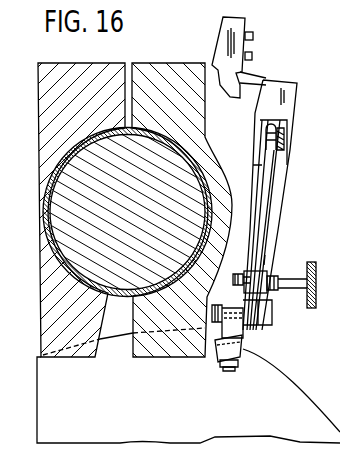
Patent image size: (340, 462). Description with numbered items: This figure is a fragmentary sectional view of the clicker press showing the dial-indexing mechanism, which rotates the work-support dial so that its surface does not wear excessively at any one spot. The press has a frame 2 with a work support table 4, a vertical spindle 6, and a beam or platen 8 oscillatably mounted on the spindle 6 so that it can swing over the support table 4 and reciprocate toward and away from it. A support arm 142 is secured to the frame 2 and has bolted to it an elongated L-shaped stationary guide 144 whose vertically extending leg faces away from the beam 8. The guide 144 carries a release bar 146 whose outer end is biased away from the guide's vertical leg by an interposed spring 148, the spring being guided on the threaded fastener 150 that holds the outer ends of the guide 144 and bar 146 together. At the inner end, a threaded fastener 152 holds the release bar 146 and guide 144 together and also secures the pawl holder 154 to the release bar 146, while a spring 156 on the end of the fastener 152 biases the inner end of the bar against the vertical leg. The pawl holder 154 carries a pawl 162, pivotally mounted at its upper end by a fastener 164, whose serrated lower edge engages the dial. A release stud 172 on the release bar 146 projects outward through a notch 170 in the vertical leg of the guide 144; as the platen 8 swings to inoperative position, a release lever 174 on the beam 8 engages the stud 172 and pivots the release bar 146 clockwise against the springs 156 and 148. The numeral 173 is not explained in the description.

The frame 2 is at (222, 27).
The work support table 4 is at (297, 384).
The vertical spindle 6 is at (145, 130).
The beam 8 is at (91, 63).
The support arm 142 is at (292, 104).
The stationary guide 144 is at (283, 192).
The release bar 146 is at (264, 212).
The spring 148 is at (283, 126).
The threaded fastener 150 is at (285, 146).
The threaded fastener 152 is at (266, 326).
The pawl holder 154 is at (243, 345).
The spring 156 is at (219, 305).
The pawl 162 is at (221, 365).
The fastener 164 is at (230, 369).
The notch 170 is at (258, 282).
The release stud 172 is at (284, 289).
The guide 173 is at (267, 257).
The release lever 174 is at (315, 273).